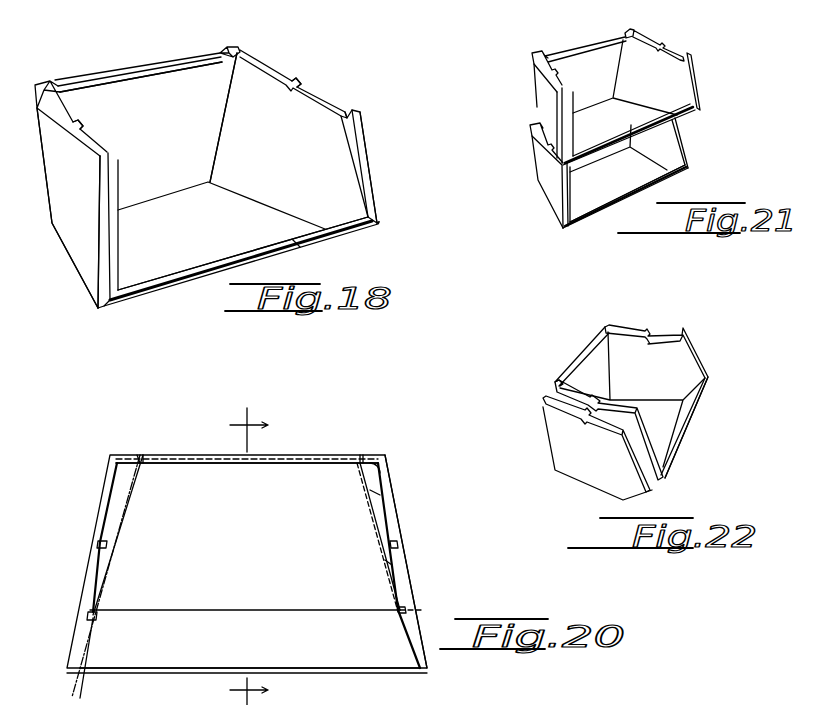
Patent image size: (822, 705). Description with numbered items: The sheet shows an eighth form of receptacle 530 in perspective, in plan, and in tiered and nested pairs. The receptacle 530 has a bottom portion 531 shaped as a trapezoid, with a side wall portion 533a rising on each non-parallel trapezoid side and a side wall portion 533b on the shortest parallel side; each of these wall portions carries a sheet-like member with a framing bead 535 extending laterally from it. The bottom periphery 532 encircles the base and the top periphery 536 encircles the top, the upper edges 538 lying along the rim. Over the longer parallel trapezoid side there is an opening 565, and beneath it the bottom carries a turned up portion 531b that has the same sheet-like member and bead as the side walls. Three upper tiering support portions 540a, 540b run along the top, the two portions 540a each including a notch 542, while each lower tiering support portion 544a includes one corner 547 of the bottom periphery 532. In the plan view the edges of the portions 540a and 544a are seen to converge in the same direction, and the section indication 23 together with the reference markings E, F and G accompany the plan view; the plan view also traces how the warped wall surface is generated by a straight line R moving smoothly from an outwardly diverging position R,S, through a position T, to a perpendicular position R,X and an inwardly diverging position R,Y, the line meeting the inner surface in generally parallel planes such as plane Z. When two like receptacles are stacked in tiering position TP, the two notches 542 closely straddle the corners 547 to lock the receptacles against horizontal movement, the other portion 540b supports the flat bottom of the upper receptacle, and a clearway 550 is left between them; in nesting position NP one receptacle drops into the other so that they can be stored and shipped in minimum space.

In FIG. 18, the receptacle 530 is at (388, 203).
In FIG. 22, the receptacle 530 is at (661, 493).
In FIG. 18, the bottom portion 531 is at (221, 213).
In FIG. 20, the bottom portion 531 is at (247, 514).
In FIG. 18, the turned up portion 531b is at (170, 290).
In FIG. 18, the bottom periphery 532 is at (72, 275).
In FIG. 18, the side wall portion 533a is at (202, 180).
In FIG. 18, the side wall portion 533b is at (148, 117).
In FIG. 18, the framing bead 535 is at (100, 178).
In FIG. 18, the top periphery 536 is at (315, 115).
In FIG. 18, the upper edges 538 is at (256, 45).
In FIG. 18, the upper tiering support portion 540a is at (84, 138).
In FIG. 20, the upper tiering support portion 540a is at (398, 577).
In FIG. 18, the upper tiering support portion 540b is at (159, 67).
In FIG. 18, the notch 542 is at (103, 146).
In FIG. 18, the lower tiering support portion 544a is at (353, 235).
In FIG. 20, the lower tiering support portion 544a is at (388, 578).
In FIG. 18, the corner 547 is at (108, 312).
In FIG. 21, the clearway 550 is at (643, 158).
In FIG. 18, the opening 565 is at (300, 245).
In FIG. 20, the section line 23- 23 is at (264, 556).
In FIG. 20, the outer wall plane E is at (74, 690).
In FIG. 20, the inner wall plane F is at (86, 690).
In FIG. 20, the wall intersection point G is at (87, 611).
In FIG. 20, the straight line R is at (378, 495).
In FIG. 20, the line position S R,S is at (388, 470).
In FIG. 20, the line position X R,X is at (386, 563).
In FIG. 20, the line position Y R,Y is at (398, 608).
In FIG. 20, the line position T is at (392, 541).
In FIG. 20, the plane Z is at (423, 610).
In FIG. 21, the tiering position TP is at (533, 155).
In FIG. 22, the nesting position NP is at (549, 403).